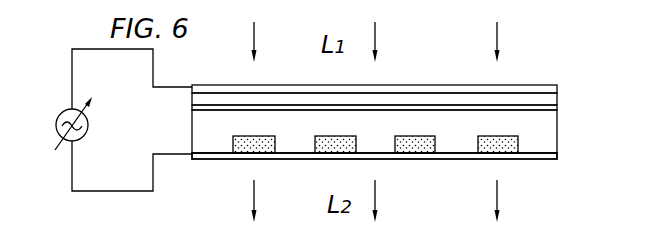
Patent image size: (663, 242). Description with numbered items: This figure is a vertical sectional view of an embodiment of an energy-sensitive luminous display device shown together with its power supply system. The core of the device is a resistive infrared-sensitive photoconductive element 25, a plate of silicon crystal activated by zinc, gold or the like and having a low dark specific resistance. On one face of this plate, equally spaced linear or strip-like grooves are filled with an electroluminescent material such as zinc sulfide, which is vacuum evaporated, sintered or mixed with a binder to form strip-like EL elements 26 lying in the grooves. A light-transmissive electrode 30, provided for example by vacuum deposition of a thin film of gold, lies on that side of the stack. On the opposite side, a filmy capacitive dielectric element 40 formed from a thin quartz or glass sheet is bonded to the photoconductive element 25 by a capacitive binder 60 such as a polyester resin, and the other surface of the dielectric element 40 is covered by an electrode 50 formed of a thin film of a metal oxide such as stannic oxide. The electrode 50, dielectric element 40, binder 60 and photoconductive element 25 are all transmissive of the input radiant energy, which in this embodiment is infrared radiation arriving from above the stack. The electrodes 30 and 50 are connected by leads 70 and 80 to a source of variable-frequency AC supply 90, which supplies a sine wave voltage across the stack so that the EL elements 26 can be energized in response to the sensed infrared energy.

The lead 70 is at (88, 50).
The lead 80 is at (153, 182).
The source of variable-frequency AC supply 90 is at (85, 137).
The electrode 50 is at (553, 85).
The capacitive dielectric element 40 is at (553, 100).
The capacitive binder 60 is at (555, 112).
The resistive infrared-sensitive photoconductive element 25 is at (555, 133).
The light-transmissive electrode 30 is at (556, 157).
The EL elements 26 is at (502, 145).